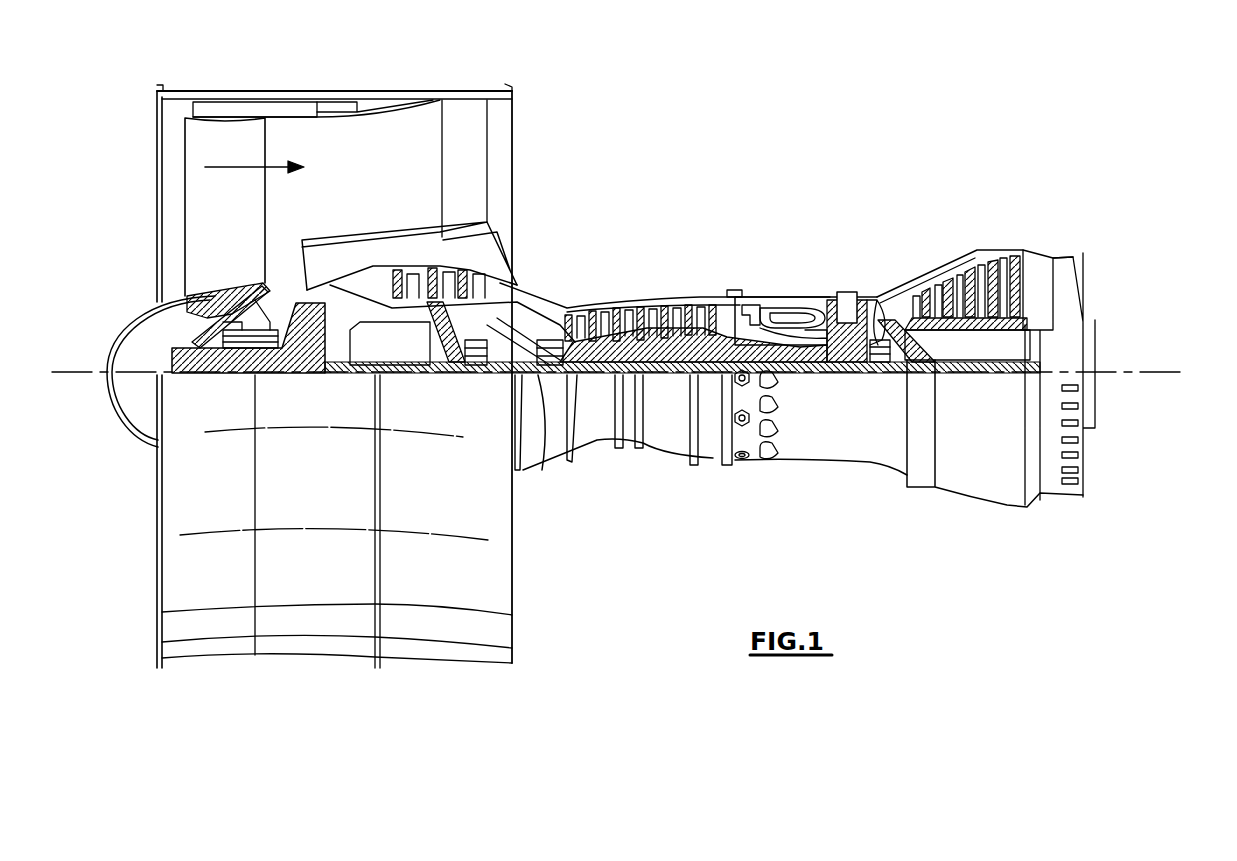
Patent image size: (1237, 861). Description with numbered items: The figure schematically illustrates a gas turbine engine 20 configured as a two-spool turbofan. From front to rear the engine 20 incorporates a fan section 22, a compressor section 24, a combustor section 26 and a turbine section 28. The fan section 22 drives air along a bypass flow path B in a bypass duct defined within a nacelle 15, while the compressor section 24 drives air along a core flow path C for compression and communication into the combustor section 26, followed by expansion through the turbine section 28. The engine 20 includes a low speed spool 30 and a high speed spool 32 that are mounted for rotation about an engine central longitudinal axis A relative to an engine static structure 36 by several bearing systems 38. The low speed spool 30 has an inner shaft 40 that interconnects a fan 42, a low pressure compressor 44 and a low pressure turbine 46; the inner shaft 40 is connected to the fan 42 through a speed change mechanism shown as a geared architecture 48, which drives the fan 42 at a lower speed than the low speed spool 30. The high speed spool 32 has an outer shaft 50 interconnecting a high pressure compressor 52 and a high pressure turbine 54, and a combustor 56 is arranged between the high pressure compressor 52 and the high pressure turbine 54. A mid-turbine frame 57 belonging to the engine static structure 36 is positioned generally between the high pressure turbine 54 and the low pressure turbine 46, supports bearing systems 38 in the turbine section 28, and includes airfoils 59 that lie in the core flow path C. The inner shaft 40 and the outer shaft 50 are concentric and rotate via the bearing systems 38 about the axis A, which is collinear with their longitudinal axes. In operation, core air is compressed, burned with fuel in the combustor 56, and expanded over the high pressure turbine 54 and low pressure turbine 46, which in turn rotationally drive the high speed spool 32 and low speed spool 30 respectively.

The nacelle 15 is at (337, 95).
The gas turbine engine 20 is at (792, 138).
The fan section 22 is at (262, 82).
The compressor section 24 is at (565, 272).
The combustor section 26 is at (782, 262).
The turbine section 28 is at (935, 225).
The low speed spool 30 is at (668, 388).
The high speed spool 32 is at (713, 327).
The engine static structure 36 is at (708, 470).
The bearing systems 38 is at (475, 365).
The inner shaft 40 is at (535, 440).
The fan 42 is at (237, 221).
The low pressure compressor 44 is at (432, 285).
The low pressure turbine 46 is at (972, 268).
The geared architecture 48 is at (340, 357).
The outer shaft 50 is at (796, 360).
The high pressure compressor 52 is at (643, 337).
The high pressure turbine 54 is at (847, 292).
The combustor 56 is at (784, 317).
The mid-turbine frame 57 is at (898, 268).
The airfoils 59 is at (908, 320).
The engine central longitudinal axis A is at (1172, 372).
The bypass flow path B is at (237, 167).
The core flow path C is at (330, 268).